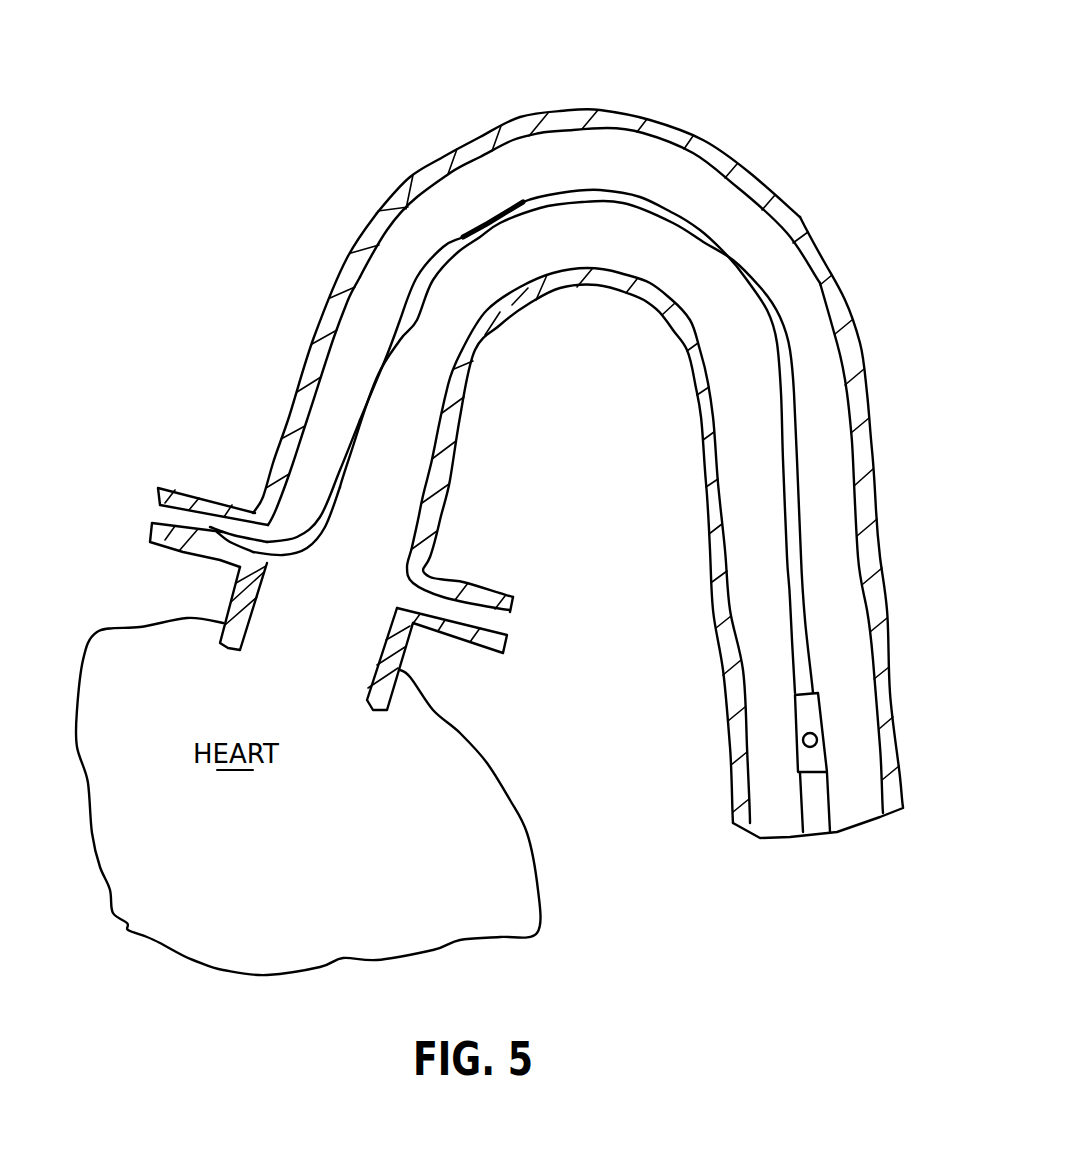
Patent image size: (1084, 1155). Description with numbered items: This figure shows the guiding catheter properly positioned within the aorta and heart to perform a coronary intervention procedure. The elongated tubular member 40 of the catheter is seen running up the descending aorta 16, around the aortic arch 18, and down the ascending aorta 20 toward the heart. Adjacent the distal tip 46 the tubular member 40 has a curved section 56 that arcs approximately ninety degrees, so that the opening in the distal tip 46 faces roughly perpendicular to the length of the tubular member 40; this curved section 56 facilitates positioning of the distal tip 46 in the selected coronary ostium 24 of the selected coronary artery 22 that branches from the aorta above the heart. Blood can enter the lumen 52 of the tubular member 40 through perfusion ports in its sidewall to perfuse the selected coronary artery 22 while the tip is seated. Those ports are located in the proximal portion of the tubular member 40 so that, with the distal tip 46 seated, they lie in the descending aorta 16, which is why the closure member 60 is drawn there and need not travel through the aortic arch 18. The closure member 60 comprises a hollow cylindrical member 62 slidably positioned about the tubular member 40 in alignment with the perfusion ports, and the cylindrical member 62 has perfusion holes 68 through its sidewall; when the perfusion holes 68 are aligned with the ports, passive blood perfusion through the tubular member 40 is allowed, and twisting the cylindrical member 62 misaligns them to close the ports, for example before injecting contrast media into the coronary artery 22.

The descending aorta 16 is at (887, 623).
The aortic arch 18 is at (677, 123).
The ascending aorta 20 is at (333, 285).
The coronary artery 22 is at (193, 494).
The coronary ostium 24 is at (207, 532).
The tubular member 40 is at (626, 432).
The distal tip 46 is at (213, 533).
The lumen 52 is at (478, 222).
The curved section 56 is at (283, 558).
The closure member 60 is at (773, 754).
The hollow cylindrical member 62 is at (797, 765).
The perfusion holes 68 is at (818, 735).